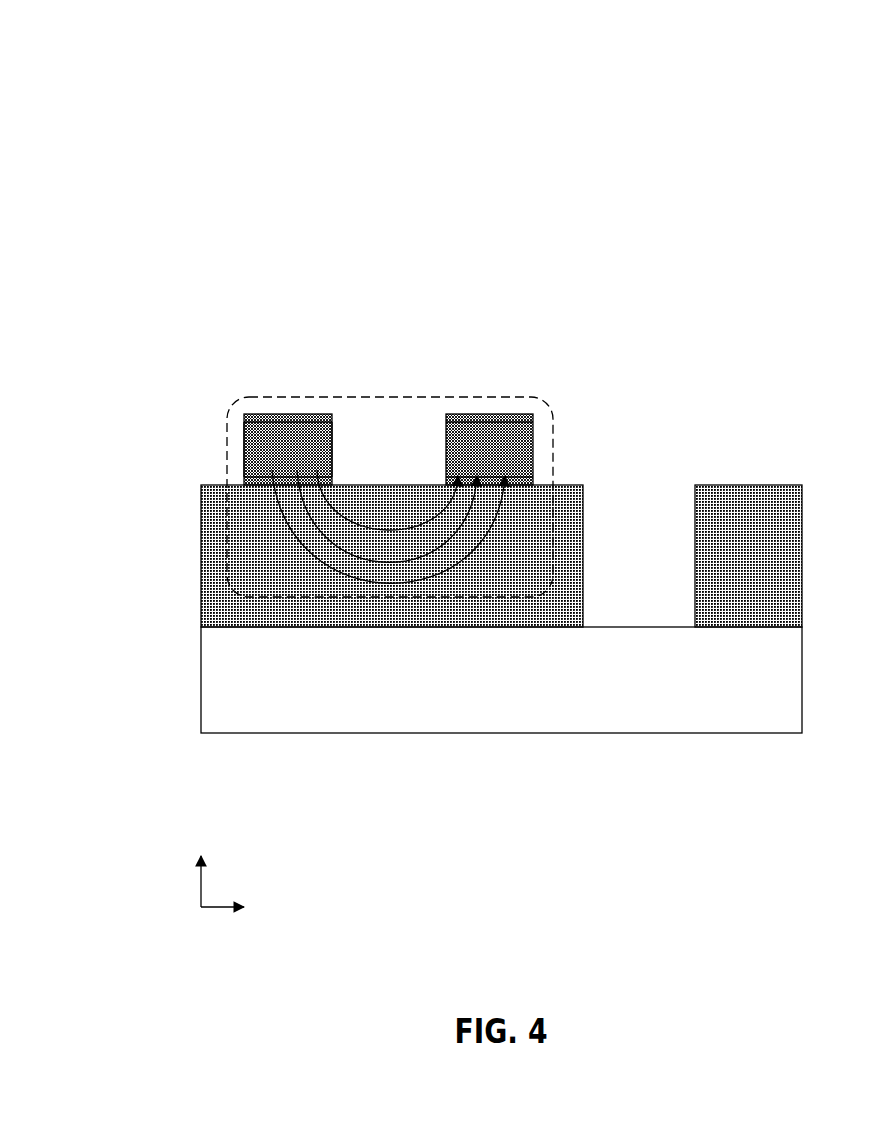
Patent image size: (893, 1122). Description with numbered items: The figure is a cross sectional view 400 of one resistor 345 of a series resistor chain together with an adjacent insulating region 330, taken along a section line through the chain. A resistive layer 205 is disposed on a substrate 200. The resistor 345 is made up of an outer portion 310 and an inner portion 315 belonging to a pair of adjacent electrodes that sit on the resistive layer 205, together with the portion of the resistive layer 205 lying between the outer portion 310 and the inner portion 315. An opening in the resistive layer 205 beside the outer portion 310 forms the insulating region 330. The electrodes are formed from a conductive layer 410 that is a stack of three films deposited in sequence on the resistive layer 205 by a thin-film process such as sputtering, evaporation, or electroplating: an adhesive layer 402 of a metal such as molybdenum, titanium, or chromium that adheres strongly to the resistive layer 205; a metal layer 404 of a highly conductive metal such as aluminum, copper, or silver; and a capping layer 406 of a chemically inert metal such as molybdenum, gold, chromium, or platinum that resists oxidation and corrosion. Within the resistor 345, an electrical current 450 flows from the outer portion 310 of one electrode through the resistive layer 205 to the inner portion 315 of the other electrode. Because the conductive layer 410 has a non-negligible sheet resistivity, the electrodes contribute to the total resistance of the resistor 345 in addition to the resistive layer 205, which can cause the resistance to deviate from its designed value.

The cross sectional view 400 is at (688, 88).
The substrate 200 is at (483, 691).
The resistive layer 205 is at (227, 603).
The insulating region 330 is at (630, 503).
The resistor 345 is at (267, 397).
The outer portion 310 is at (298, 427).
The inner portion 315 is at (493, 428).
The conductive layer 410 is at (292, 411).
The capping layer 406 is at (244, 419).
The metal layer 404 is at (244, 455).
The adhesive layer 402 is at (244, 481).
The electrical current 450 is at (390, 530).